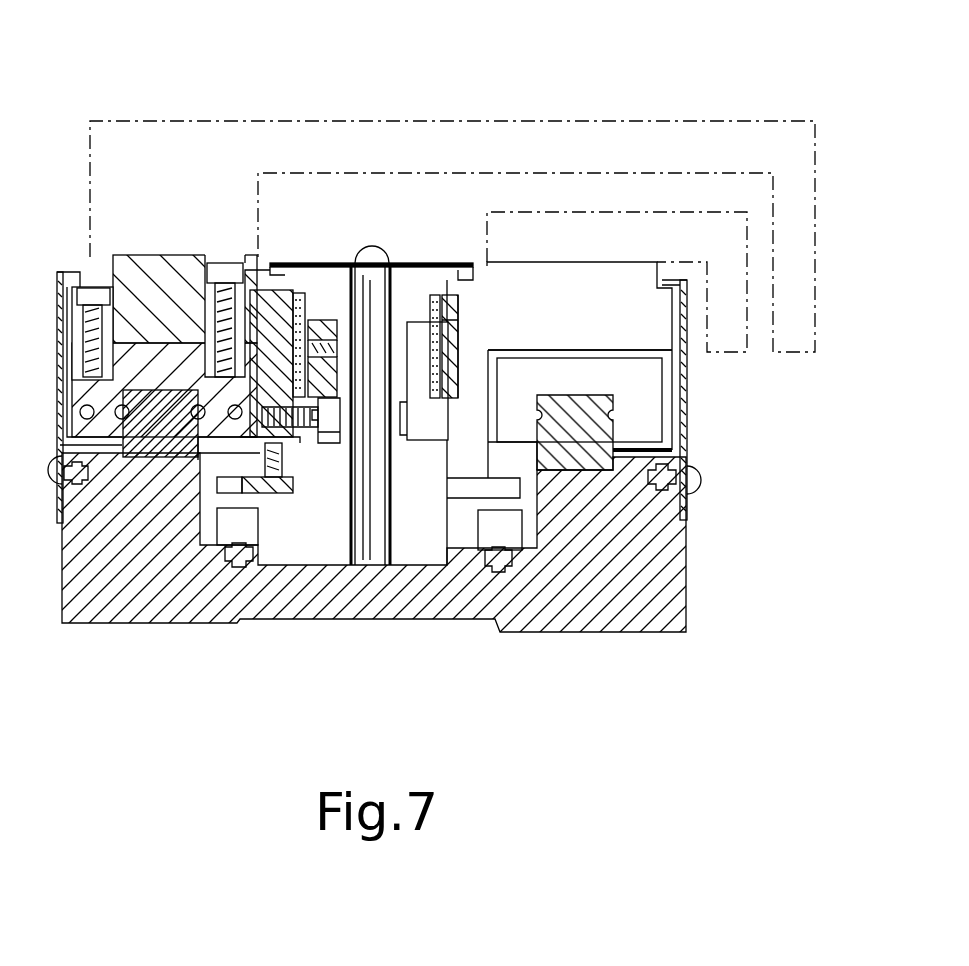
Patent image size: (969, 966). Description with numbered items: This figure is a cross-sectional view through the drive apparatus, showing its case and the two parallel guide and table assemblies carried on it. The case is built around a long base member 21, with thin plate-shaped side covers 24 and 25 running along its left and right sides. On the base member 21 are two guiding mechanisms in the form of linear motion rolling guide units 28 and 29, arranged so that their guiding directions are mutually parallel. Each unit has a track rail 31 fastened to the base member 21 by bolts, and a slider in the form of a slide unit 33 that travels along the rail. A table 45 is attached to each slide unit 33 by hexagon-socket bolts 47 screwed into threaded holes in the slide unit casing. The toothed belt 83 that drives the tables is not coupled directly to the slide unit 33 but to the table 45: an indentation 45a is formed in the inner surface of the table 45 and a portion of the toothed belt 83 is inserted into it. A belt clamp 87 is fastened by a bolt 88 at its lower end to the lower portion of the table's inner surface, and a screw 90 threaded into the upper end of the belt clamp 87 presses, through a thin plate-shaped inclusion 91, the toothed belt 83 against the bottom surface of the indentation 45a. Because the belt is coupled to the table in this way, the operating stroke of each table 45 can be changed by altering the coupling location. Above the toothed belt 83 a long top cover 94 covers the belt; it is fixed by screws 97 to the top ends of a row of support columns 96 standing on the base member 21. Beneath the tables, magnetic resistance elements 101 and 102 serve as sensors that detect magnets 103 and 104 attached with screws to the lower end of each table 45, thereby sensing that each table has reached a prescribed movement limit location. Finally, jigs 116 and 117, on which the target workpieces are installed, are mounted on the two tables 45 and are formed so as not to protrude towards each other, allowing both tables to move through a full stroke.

The base member 21 is at (155, 615).
The side cover 24 is at (657, 338).
The side cover 25 is at (58, 268).
The linear motion rolling guide unit 28 is at (692, 458).
The linear motion rolling guide unit 29 is at (62, 430).
The track rail 31 is at (167, 440).
The slide unit 33 is at (110, 440).
The table 45 is at (100, 262).
The indentation 45a is at (222, 272).
The bolt 47 is at (140, 262).
The toothed belt 83 is at (262, 300).
The belt clamp 87 is at (299, 300).
The bolt 88 is at (338, 440).
The screw 90 is at (370, 256).
The inclusion 91 is at (300, 322).
The top cover 94 is at (412, 323).
The support column 96 is at (374, 555).
The screw 97 is at (373, 262).
The magnetic resistance element 101 is at (487, 527).
The magnetic resistance element 102 is at (305, 492).
The magnet 103 is at (462, 495).
The magnet 104 is at (290, 495).
The jig 116 is at (695, 228).
The jig 117 is at (668, 142).